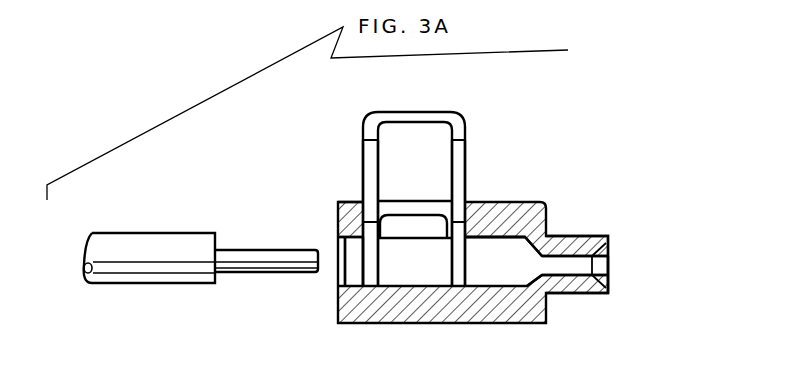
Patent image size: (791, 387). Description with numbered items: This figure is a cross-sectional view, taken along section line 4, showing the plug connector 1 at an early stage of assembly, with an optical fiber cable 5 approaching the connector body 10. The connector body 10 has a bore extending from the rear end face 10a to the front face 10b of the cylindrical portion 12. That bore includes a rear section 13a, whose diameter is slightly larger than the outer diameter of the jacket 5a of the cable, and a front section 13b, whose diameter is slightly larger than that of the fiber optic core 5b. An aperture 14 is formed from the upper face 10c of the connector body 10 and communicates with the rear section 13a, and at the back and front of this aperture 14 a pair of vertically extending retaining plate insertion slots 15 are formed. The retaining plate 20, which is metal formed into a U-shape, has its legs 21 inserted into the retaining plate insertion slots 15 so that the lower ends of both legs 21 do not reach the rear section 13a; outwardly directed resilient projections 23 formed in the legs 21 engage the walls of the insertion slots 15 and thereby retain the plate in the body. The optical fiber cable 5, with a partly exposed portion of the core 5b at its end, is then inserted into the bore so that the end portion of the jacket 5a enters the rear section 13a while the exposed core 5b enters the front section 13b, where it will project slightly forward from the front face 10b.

The plug connector 1 is at (289, 135).
The section line 4- 4 is at (463, 105).
The optical fiber cable 5 is at (155, 296).
The jacket 5a is at (197, 284).
The fiber optic core 5b is at (280, 273).
The connector body 10 is at (550, 191).
The rear end face 10a is at (338, 225).
The front face 10b is at (608, 287).
The upper face 10c is at (352, 200).
The cylindrical portion 12 is at (570, 232).
The rear section 13a is at (503, 261).
The front section 13b is at (575, 263).
The aperture 14 is at (405, 226).
The retaining plate insertion slots 15 is at (362, 267).
The retaining plate 20 is at (476, 125).
The legs 21 is at (363, 155).
The resilient projections 23 is at (345, 213).